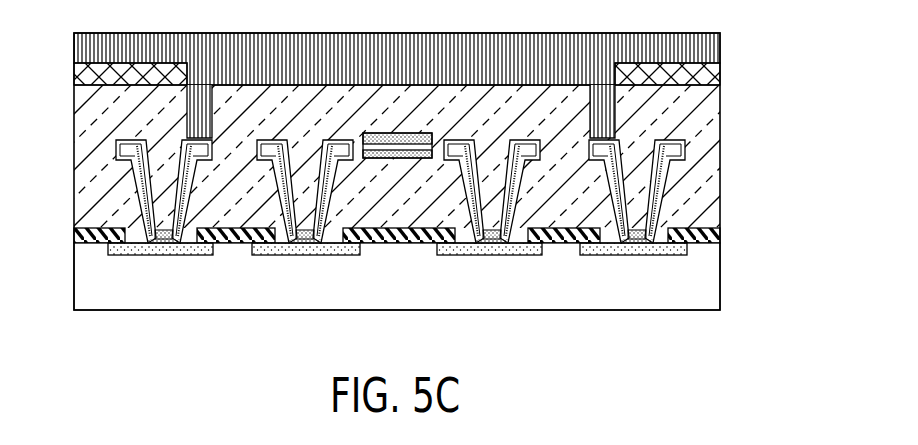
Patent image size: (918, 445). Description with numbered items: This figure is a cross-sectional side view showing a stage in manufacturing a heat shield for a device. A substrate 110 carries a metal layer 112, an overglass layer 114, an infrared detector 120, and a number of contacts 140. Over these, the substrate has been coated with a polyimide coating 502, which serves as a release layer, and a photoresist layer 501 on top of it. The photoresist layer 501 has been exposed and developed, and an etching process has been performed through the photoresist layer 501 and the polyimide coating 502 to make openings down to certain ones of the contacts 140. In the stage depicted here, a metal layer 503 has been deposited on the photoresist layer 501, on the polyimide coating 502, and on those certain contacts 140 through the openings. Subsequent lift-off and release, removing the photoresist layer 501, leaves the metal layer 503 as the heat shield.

The substrate 110 is at (688, 295).
The metal layer 112 is at (300, 247).
The overglass layer 114 is at (77, 238).
The infrared detector 120 is at (402, 122).
The contacts 140 is at (187, 157).
The photoresist layer 501 is at (717, 74).
The polyimide coating 502 is at (708, 153).
The metal layer 503 is at (716, 46).